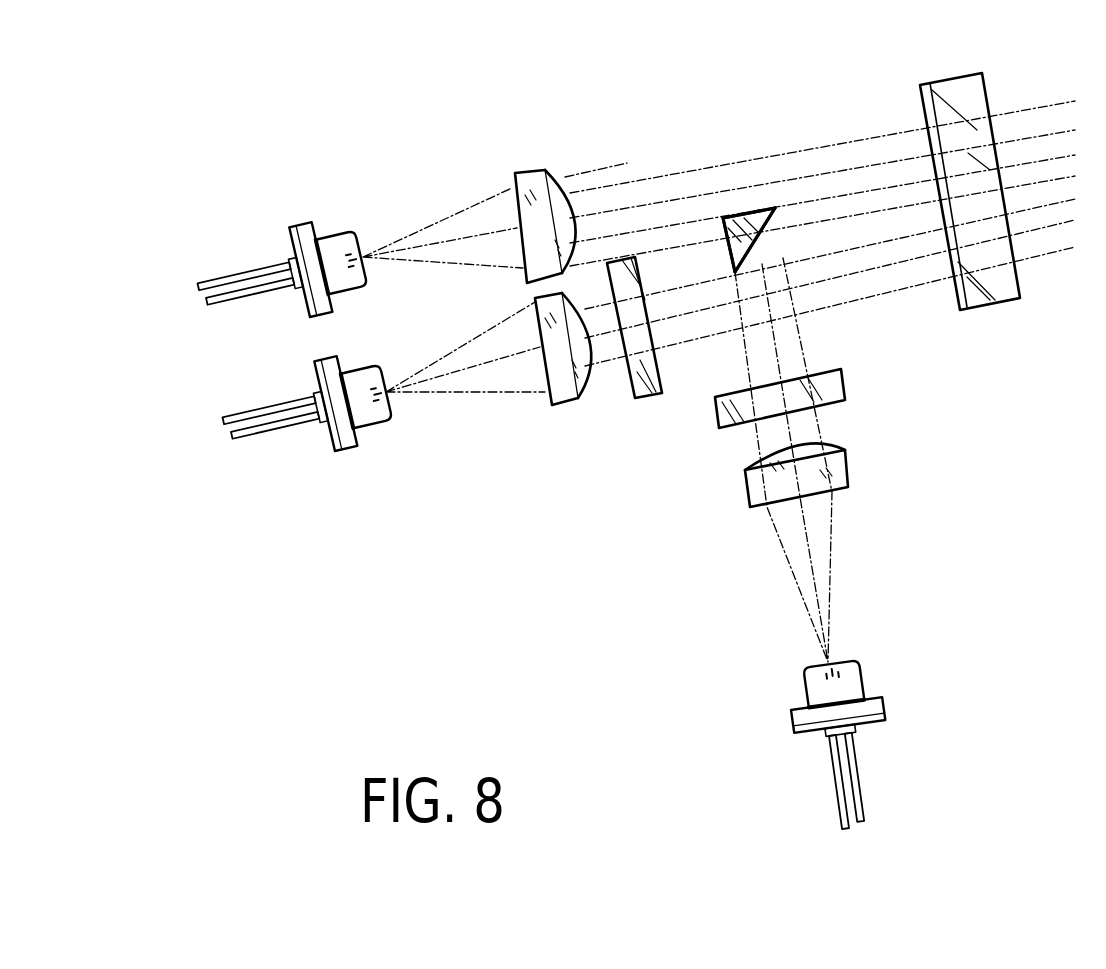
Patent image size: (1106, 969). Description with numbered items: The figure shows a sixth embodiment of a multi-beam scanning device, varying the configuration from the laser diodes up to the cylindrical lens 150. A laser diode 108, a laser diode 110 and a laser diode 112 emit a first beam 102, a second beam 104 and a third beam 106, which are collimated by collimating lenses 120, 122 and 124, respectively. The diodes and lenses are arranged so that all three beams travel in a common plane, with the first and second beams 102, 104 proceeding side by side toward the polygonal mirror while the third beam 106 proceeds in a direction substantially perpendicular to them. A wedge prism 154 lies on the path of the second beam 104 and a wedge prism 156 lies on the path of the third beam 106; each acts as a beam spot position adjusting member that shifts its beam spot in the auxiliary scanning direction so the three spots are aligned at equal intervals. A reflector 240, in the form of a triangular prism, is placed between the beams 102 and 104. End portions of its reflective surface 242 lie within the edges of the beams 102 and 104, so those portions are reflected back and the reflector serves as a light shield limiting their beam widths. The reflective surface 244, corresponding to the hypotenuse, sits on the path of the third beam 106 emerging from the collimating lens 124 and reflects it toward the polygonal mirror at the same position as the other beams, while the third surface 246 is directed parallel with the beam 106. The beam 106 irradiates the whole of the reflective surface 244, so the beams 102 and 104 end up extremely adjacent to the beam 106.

The first beam 102 is at (442, 217).
The second beam 104 is at (486, 396).
The third beam 106 is at (793, 588).
The laser diode 108 is at (307, 233).
The laser diode 110 is at (340, 445).
The laser diode 112 is at (813, 735).
The collimating lens 120 is at (528, 173).
The collimating lens 122 is at (552, 405).
The collimating lens 124 is at (845, 482).
The cylindrical lens 150 is at (990, 305).
The wedge prism 154 is at (648, 398).
The wedge prism 156 is at (833, 384).
The reflector 240 is at (758, 200).
The reflective surface 242 is at (725, 248).
The reflective surface 244 is at (772, 215).
The third surface 246 is at (735, 213).